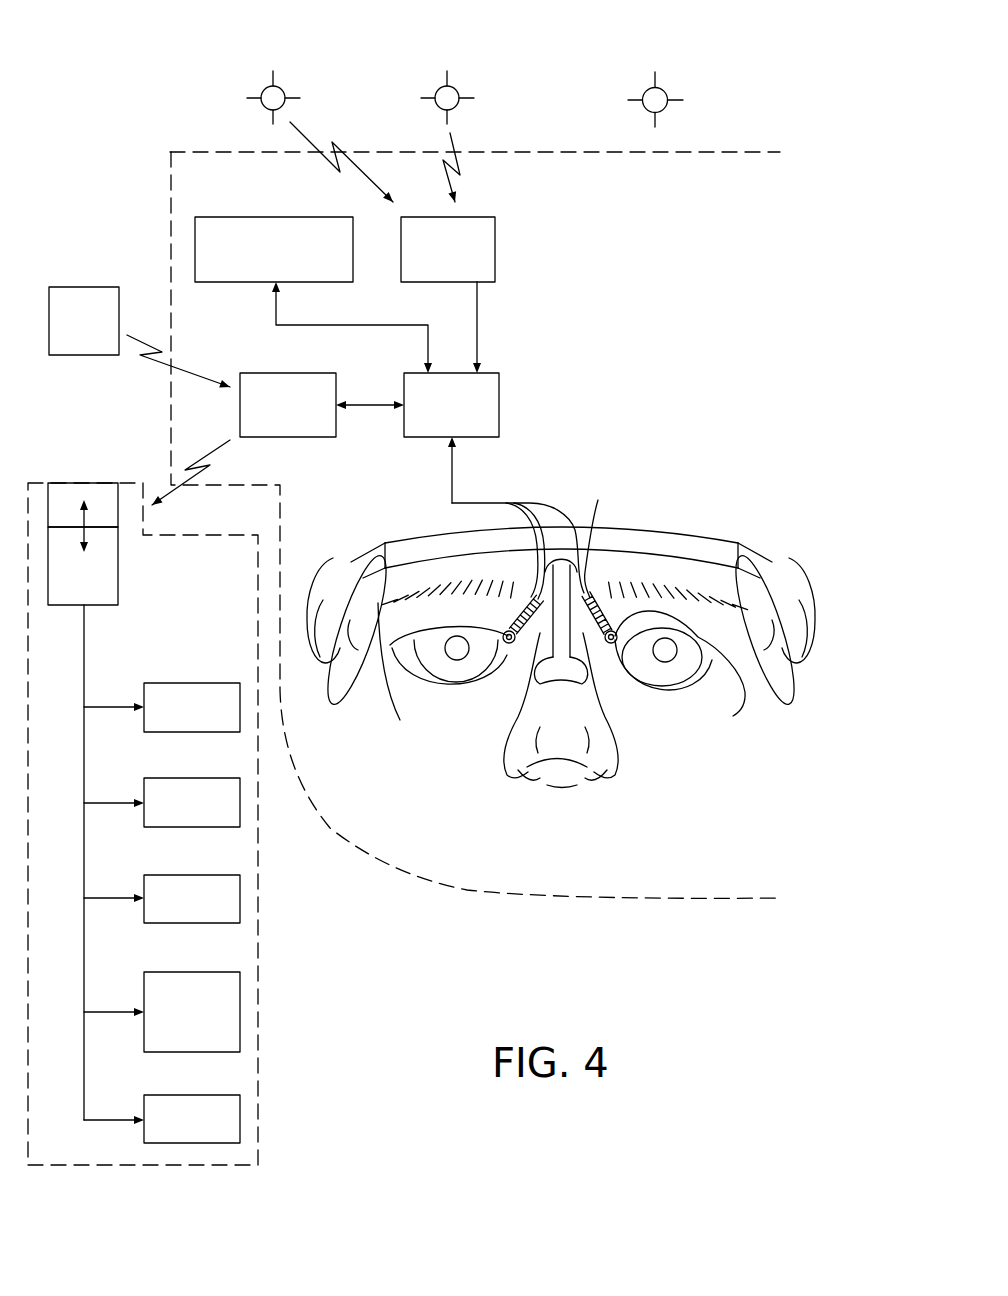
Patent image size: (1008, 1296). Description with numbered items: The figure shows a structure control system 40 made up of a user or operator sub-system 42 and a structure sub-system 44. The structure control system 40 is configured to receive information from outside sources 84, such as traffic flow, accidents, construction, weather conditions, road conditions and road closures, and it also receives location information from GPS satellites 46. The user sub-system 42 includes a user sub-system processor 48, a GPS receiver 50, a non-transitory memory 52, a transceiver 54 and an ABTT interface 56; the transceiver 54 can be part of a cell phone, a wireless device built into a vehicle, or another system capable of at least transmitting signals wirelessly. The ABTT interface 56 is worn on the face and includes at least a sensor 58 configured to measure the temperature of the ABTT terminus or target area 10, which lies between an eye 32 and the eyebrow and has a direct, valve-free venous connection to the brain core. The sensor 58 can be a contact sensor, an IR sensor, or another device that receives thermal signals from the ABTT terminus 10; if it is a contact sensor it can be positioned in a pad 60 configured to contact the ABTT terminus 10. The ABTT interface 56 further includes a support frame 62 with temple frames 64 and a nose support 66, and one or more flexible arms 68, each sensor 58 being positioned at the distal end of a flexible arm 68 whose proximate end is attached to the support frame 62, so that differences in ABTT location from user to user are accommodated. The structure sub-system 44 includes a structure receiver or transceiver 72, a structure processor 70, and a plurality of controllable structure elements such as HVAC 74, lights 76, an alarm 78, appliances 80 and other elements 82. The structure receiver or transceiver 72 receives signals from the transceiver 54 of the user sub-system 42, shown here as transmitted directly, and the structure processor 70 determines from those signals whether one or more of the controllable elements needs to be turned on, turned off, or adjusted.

The ABTT target area 10 is at (508, 630).
The eye 32 is at (440, 665).
The structure control system 40 is at (192, 98).
The user sub-system 42 is at (537, 190).
The structure sub-system 44 is at (238, 942).
The GPS satellites 46 is at (283, 77).
The user sub-system processor 48 is at (480, 402).
The GPS receiver 50 is at (465, 250).
The non-transitory memory 52 is at (242, 238).
The transceiver 54 is at (260, 390).
The ABTT interface 56 is at (635, 505).
The sensor 58 is at (508, 645).
The pad 60 is at (503, 636).
The support frame 62 is at (690, 538).
The temple frames 64 is at (365, 563).
The nose support 66 is at (620, 767).
The flexible arm 68 is at (598, 502).
The structure processor 70 is at (105, 583).
The structure receiver or transceiver 72 is at (63, 497).
The HVAC 74 is at (192, 690).
The lights 76 is at (233, 808).
The alarm 78 is at (233, 905).
The appliances 80 is at (233, 1010).
The other elements 82 is at (233, 1118).
The outside sources 84 is at (81, 305).